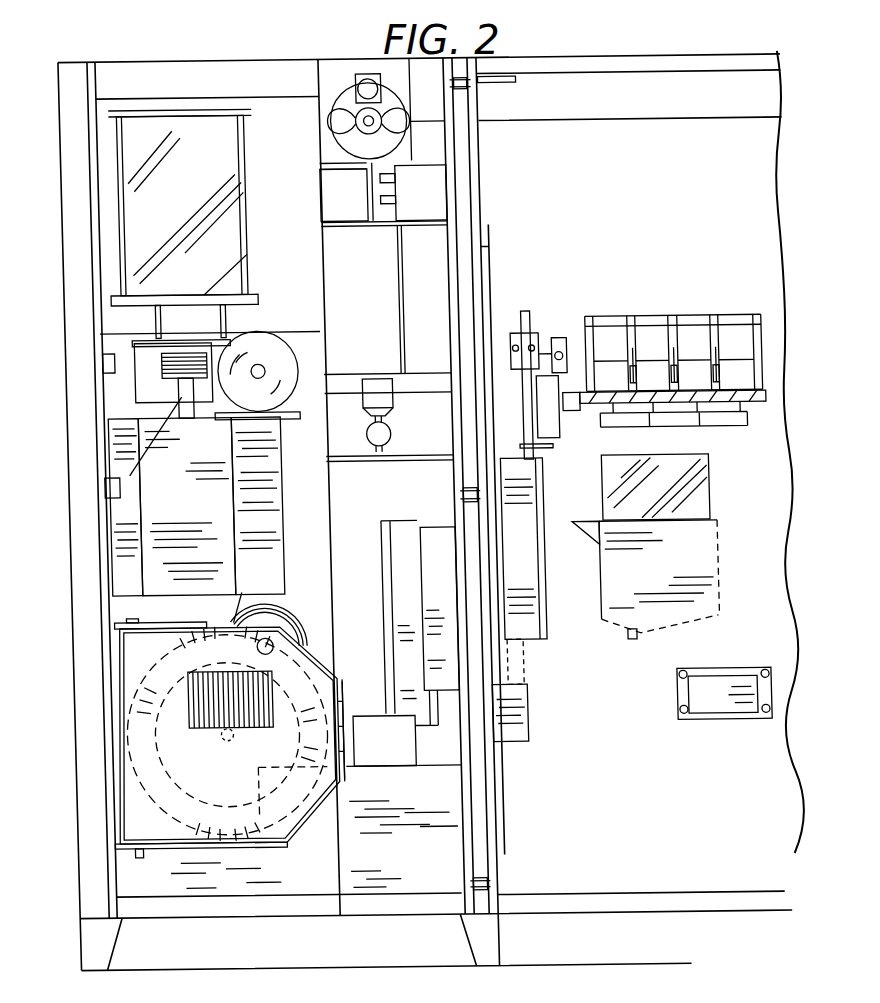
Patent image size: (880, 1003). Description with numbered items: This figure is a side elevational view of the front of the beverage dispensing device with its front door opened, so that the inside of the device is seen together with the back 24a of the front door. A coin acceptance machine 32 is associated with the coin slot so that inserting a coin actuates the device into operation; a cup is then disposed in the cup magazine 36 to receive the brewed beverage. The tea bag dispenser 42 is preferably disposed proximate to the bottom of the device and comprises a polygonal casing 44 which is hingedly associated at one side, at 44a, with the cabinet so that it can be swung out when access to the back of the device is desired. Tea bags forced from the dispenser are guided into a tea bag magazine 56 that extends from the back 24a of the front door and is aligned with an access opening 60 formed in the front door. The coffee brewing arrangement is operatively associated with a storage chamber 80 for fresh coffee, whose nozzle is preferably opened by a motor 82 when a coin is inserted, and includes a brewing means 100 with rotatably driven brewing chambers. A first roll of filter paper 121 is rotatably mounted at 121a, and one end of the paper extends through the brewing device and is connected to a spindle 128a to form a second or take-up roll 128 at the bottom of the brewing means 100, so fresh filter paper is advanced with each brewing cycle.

The back of the front door 24a is at (630, 218).
The coin acceptance machine 32 is at (524, 554).
The cup magazine 36 is at (670, 577).
The tea bag dispenser 42 is at (222, 775).
The polygonal casing 44 is at (300, 819).
The hinge connection of the casing 44a is at (125, 620).
The tea bag magazine 56 is at (724, 676).
The access opening 60 is at (675, 684).
The storage chamber 80 is at (188, 201).
The motor 82 is at (155, 374).
The brewing means 100 is at (196, 511).
The first roll of filter paper 121 is at (267, 355).
The rotatable mounting of the first roll 121a is at (253, 366).
The second or take-up roll 128 is at (259, 645).
The spindle 128a is at (262, 636).